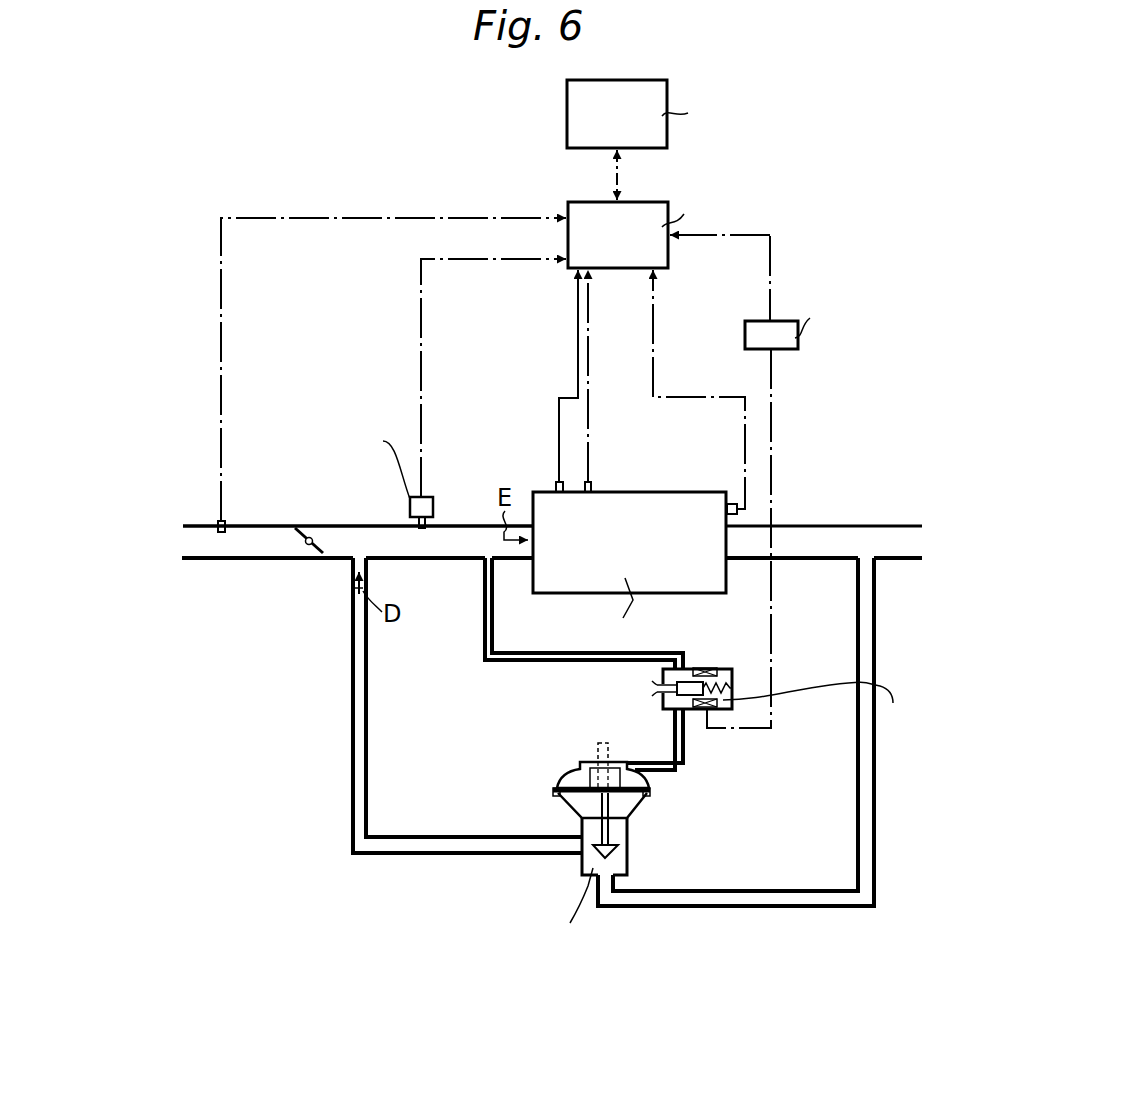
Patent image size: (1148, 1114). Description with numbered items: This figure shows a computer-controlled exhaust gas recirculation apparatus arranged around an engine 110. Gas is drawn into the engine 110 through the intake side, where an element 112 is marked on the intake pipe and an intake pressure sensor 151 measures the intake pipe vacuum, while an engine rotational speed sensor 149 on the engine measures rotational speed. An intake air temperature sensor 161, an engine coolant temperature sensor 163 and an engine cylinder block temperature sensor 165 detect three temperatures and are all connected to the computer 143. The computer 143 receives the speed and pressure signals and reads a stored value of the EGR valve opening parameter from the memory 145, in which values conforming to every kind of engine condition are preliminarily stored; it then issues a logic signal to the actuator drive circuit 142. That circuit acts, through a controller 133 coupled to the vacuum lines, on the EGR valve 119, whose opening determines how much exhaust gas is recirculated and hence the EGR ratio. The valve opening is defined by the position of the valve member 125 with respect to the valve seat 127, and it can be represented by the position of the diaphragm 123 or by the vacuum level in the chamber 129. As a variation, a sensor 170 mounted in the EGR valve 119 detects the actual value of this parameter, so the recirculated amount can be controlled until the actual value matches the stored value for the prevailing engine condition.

The memory 145 is at (640, 133).
The computer 143 is at (641, 253).
The actuator drive circuit 142 is at (783, 350).
The intake air temperature sensor 161 is at (214, 521).
The intake pipe 112 is at (347, 524).
The intake pressure sensor 151 is at (437, 503).
The engine coolant temperature sensor 163 is at (556, 483).
The engine cylinder block temperature sensor 165 is at (591, 483).
The engine rotational speed sensor 149 is at (732, 503).
The engine 110 is at (631, 556).
The solenoid controller 133 is at (768, 630).
The EGR valve 119 is at (629, 850).
The diaphragm 123 is at (650, 790).
The chamber 129 is at (557, 786).
The sensor 170 is at (597, 746).
The valve member 125 is at (618, 849).
The valve seat 127 is at (621, 856).